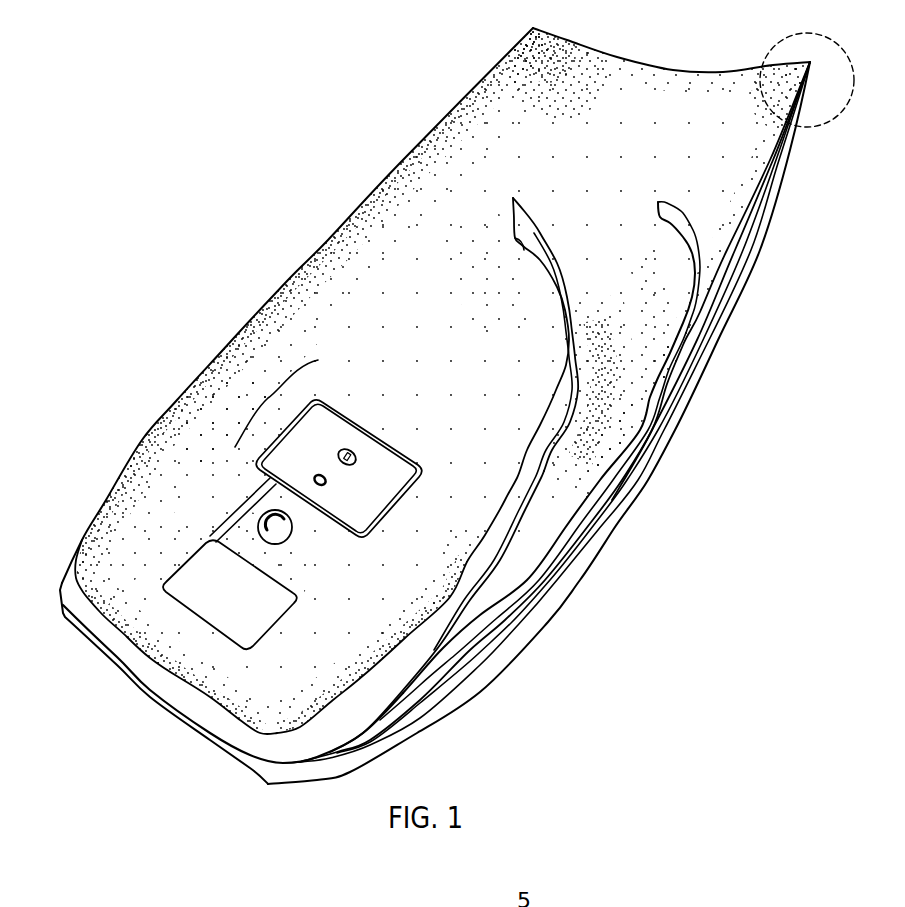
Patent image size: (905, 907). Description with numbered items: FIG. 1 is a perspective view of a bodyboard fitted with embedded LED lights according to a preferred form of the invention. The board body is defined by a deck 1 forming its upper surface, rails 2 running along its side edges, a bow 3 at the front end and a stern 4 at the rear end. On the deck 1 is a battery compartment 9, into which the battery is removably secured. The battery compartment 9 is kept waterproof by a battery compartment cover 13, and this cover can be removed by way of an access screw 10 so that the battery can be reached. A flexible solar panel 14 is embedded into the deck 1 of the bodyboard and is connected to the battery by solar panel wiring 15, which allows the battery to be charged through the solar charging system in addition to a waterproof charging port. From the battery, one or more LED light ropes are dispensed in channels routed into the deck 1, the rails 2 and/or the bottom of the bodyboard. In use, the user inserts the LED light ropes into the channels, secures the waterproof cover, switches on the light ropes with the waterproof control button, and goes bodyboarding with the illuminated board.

The deck 1 is at (492, 118).
The rails 2 is at (803, 33).
The bow 3 is at (168, 697).
The stern 4 is at (668, 65).
The battery compartment 9 is at (268, 395).
The access screw 10 is at (351, 450).
The battery compartment cover 13 is at (368, 517).
The flexible solar panel 14 is at (207, 555).
The solar panel wiring 15 is at (250, 500).